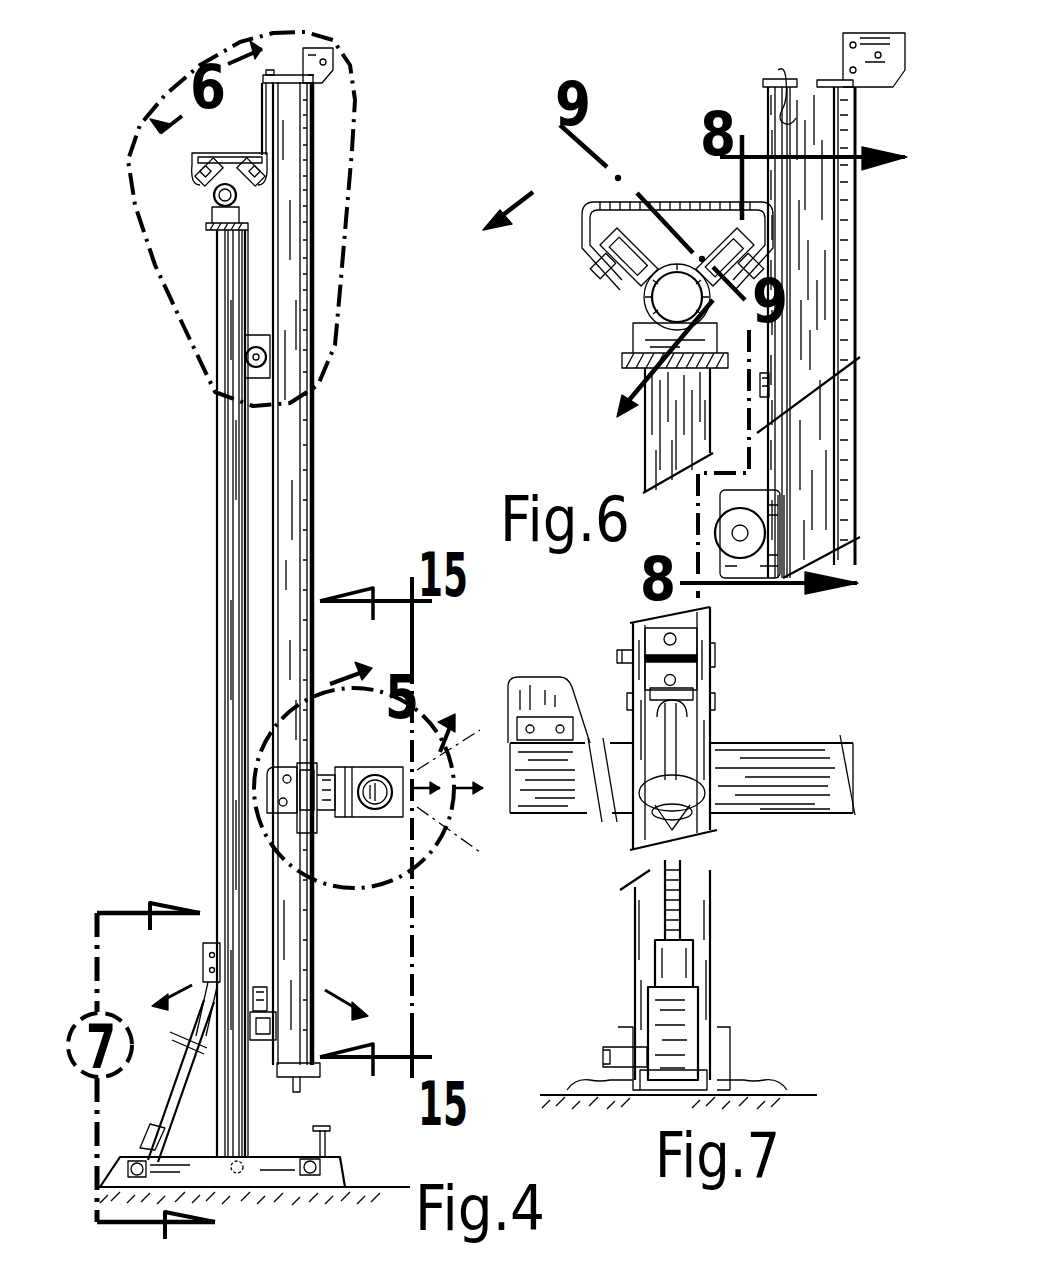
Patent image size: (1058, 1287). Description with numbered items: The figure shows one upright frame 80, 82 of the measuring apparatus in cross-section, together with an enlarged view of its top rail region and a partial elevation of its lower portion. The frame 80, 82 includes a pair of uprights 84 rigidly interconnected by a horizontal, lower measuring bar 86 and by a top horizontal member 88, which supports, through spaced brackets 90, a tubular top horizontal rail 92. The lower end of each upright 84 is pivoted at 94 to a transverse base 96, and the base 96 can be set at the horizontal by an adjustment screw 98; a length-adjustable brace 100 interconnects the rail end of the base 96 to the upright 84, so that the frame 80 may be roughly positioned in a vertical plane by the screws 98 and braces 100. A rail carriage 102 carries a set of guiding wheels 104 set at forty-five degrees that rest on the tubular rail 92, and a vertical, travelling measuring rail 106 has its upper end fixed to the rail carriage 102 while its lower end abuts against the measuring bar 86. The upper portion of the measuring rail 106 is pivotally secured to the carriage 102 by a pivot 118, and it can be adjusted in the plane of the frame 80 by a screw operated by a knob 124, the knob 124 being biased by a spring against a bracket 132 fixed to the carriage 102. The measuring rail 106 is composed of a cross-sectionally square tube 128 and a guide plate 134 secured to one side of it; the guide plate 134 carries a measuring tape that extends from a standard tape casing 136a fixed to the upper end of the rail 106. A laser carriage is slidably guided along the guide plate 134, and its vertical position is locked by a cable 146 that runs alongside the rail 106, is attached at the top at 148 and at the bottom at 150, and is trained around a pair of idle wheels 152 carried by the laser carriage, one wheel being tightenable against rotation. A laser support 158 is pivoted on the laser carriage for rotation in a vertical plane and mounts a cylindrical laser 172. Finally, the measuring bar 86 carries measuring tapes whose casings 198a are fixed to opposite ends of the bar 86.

In FIG. 4, the frame 80 is at (175, 694).
In FIG. 4, the mast assembly 82 is at (175, 694).
In FIG. 4, the upright 84 is at (175, 694).
In FIG. 6, the upright 84 is at (655, 404).
In FIG. 7, the upright 84 is at (700, 958).
In FIG. 4, the measuring bar 86 is at (265, 1042).
In FIG. 7, the measuring bar 86 is at (812, 800).
In FIG. 4, the top horizontal member 88 is at (222, 232).
In FIG. 6, the top horizontal member 88 is at (622, 360).
In FIG. 4, the bracket 90 is at (214, 218).
In FIG. 6, the bracket 90 is at (633, 333).
In FIG. 4, the top horizontal rail 92 is at (212, 200).
In FIG. 6, the top horizontal rail 92 is at (645, 297).
In FIG. 4, the pivot 94 is at (205, 1162).
In FIG. 4, the transverse base 96 is at (240, 1162).
In FIG. 7, the transverse base 96 is at (575, 1082).
In FIG. 4, the adjustment screw 98 is at (328, 1135).
In FIG. 4, the brace 100 is at (184, 1060).
In FIG. 7, the brace 100 is at (695, 928).
In FIG. 4, the rail carriage 102 is at (194, 163).
In FIG. 6, the rail carriage 102 is at (650, 205).
In FIG. 4, the guiding wheels 104 is at (215, 178).
In FIG. 6, the guiding wheels 104 is at (740, 225).
In FIG. 4, the measuring rail 106 is at (210, 484).
In FIG. 6, the measuring rail 106 is at (828, 340).
In FIG. 4, the pivot 118 is at (283, 255).
In FIG. 6, the pivot 118 is at (760, 378).
In FIG. 4, the knob 124 is at (240, 358).
In FIG. 6, the knob 124 is at (770, 562).
In FIG. 4, the square tube 128 is at (336, 573).
In FIG. 6, the square tube 128 is at (852, 525).
In FIG. 4, the bracket 132 is at (248, 400).
In FIG. 6, the bracket 132 is at (742, 578).
In FIG. 4, the guide plate 134 is at (336, 573).
In FIG. 6, the guide plate 134 is at (869, 327).
In FIG. 4, the tape casing 136a is at (333, 60).
In FIG. 6, the tape casing 136a is at (895, 72).
In FIG. 4, the cable 146 is at (268, 118).
In FIG. 6, the cable 146 is at (770, 150).
In FIG. 4, the top cable attachment 148 is at (266, 76).
In FIG. 6, the top cable attachment 148 is at (770, 84).
In FIG. 4, the bottom cable attachment 150 is at (320, 1070).
In FIG. 4, the idle wheels 152 is at (276, 790).
In FIG. 4, the laser support 158 is at (318, 762).
In FIG. 4, the laser 172 is at (382, 768).
In FIG. 4, the tape casing 198a is at (262, 985).
In FIG. 7, the tape casing 198a is at (540, 680).